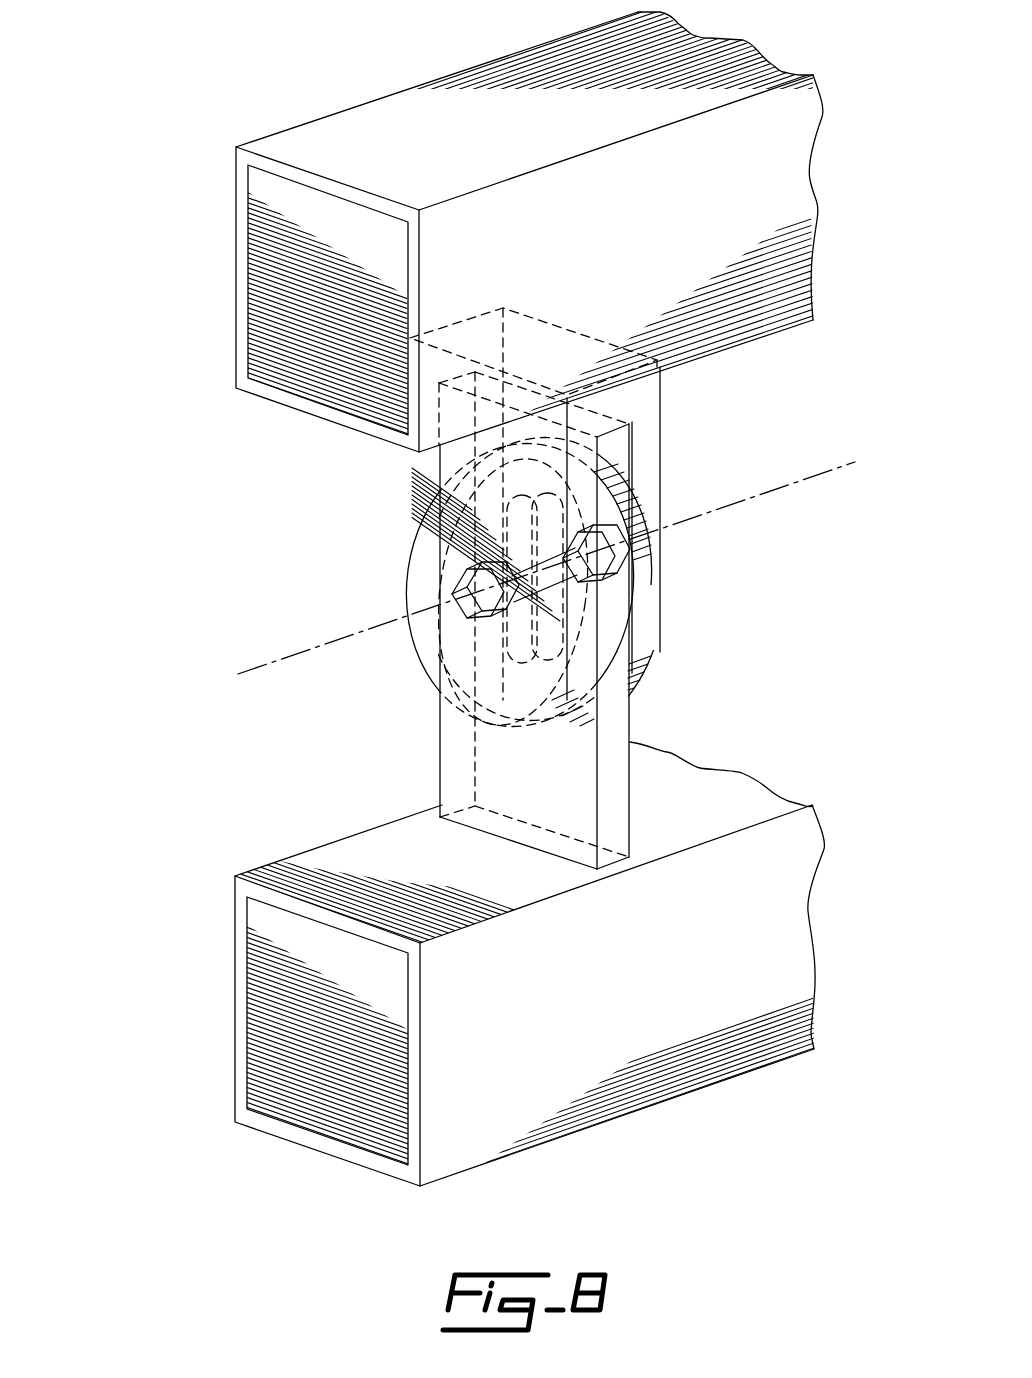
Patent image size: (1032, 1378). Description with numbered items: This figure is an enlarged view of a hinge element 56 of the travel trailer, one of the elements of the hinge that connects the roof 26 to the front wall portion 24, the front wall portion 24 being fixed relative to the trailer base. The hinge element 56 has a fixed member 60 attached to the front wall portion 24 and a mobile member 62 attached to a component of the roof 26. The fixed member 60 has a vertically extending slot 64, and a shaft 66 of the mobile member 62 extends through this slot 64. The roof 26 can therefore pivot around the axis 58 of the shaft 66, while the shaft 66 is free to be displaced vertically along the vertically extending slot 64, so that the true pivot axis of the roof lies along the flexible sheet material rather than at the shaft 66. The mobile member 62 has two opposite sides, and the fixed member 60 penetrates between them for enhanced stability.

The front wall portion 24 is at (548, 1030).
The roof 26 is at (352, 143).
The hinge element 56 is at (470, 588).
The axis 58 is at (830, 468).
The fixed member 60 is at (612, 776).
The mobile member 62 is at (650, 443).
The vertically extending slot 64 is at (436, 704).
The shaft 66 is at (455, 600).